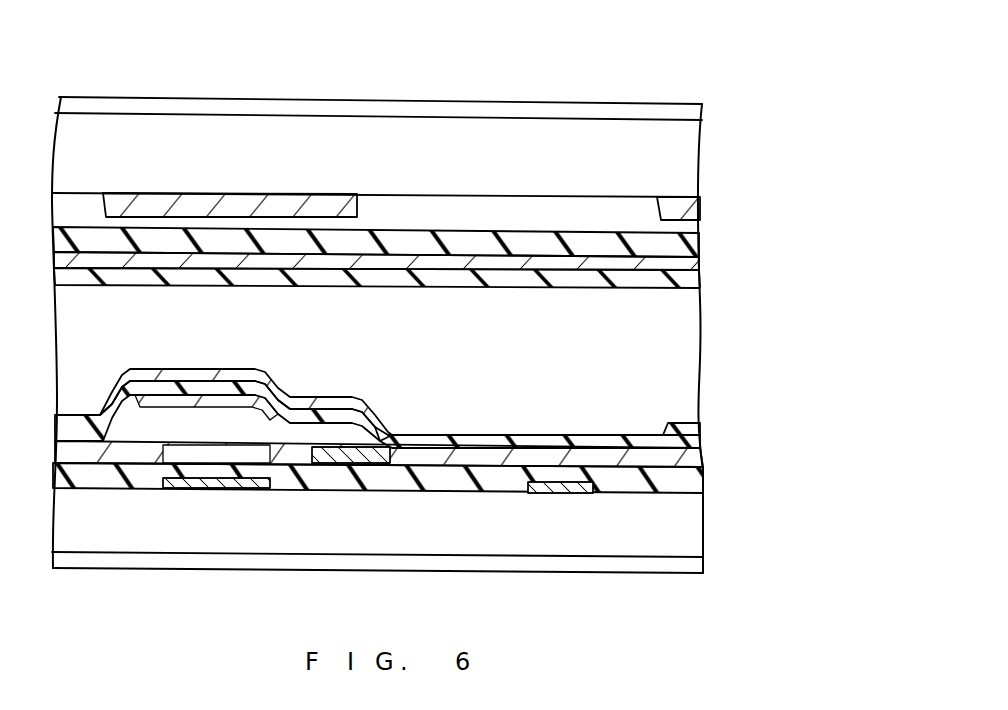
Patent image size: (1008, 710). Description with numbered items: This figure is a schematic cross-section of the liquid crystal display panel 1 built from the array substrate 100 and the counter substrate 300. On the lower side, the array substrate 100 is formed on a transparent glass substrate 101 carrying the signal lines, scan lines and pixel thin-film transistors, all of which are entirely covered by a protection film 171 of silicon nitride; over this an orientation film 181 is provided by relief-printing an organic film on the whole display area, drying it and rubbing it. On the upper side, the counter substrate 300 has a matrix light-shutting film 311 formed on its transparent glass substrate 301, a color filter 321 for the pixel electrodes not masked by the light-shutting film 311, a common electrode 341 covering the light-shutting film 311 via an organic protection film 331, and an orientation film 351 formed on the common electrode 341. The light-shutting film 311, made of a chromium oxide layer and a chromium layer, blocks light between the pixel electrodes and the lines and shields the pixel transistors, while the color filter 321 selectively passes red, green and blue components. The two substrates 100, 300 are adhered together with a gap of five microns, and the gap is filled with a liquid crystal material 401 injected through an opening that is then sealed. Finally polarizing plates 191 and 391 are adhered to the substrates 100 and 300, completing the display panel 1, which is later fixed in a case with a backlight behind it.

The liquid crystal display panel 1 is at (785, 68).
The array substrate 100 is at (770, 508).
The glass substrate 101 is at (688, 538).
The protection film 171 is at (697, 435).
The orientation film 181 is at (667, 427).
The polarizing plate 191 is at (678, 572).
The counter substrate 300 is at (758, 157).
The transparent glass substrate 301 is at (682, 152).
The light-shutting film 311 is at (212, 197).
The color filter 321 is at (462, 212).
The organic protection film 331 is at (690, 236).
The common electrode 341 is at (690, 263).
The orientation film 351 is at (692, 282).
The polarizing plate 391 is at (663, 112).
The liquid crystal material 401 is at (687, 353).